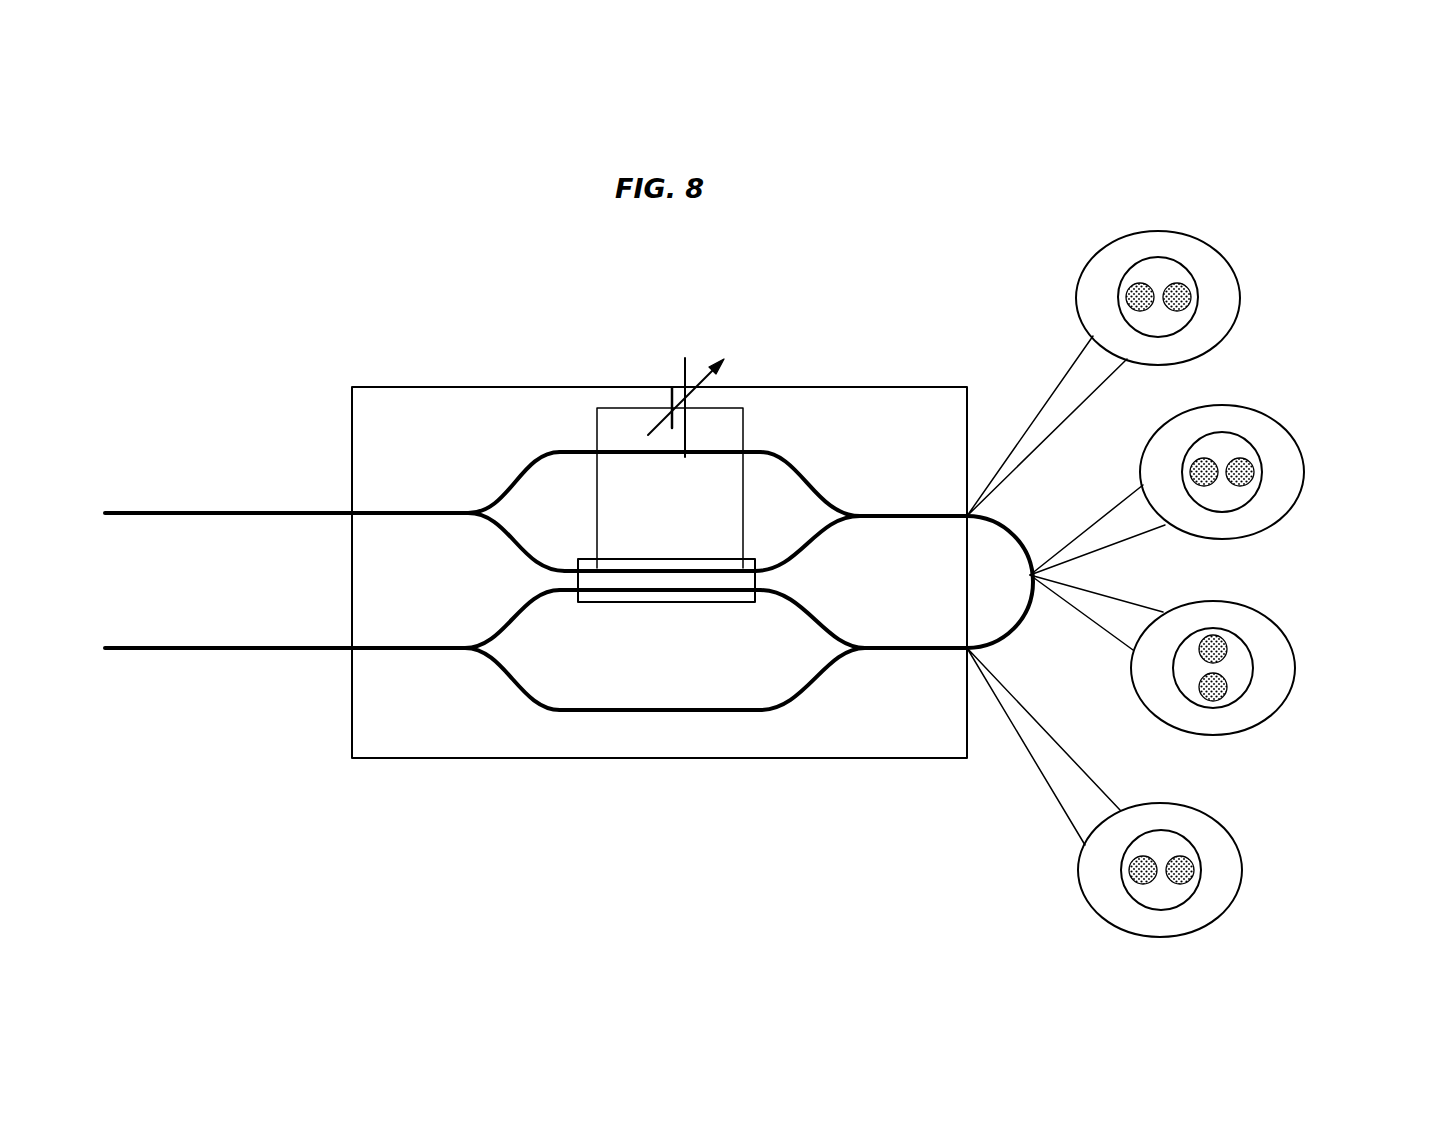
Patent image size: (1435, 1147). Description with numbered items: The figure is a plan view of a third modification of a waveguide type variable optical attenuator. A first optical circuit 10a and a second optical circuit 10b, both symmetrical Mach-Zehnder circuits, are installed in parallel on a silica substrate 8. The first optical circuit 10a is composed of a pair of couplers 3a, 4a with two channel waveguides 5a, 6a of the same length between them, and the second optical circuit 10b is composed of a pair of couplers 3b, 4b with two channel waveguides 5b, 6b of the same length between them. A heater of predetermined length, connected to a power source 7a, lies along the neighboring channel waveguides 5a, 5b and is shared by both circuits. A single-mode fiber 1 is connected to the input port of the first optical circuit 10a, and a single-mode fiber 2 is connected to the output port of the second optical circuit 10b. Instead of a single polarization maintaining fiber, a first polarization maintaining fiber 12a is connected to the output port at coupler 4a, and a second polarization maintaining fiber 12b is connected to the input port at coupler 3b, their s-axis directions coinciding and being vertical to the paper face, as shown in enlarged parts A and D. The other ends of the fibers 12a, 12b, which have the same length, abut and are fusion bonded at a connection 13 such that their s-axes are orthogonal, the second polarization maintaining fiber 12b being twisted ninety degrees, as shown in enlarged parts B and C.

The single-mode fiber 1 is at (203, 511).
The single-mode fiber 2 is at (190, 652).
The coupler 3a is at (458, 512).
The coupler 3b is at (872, 650).
The coupler 4a is at (861, 499).
The coupler 4b is at (453, 653).
The channel waveguide 5a is at (820, 545).
The channel waveguide 5b is at (810, 617).
The channel waveguide 6a is at (805, 466).
The channel waveguide 6b is at (812, 690).
The power source 7a is at (583, 650).
The substrate 8 is at (447, 758).
The first optical circuit 10a is at (664, 439).
The second optical circuit 10b is at (602, 686).
The first polarization maintaining fiber 12a is at (995, 518).
The second polarization maintaining fiber 12b is at (1018, 632).
The connection 13 is at (1035, 576).